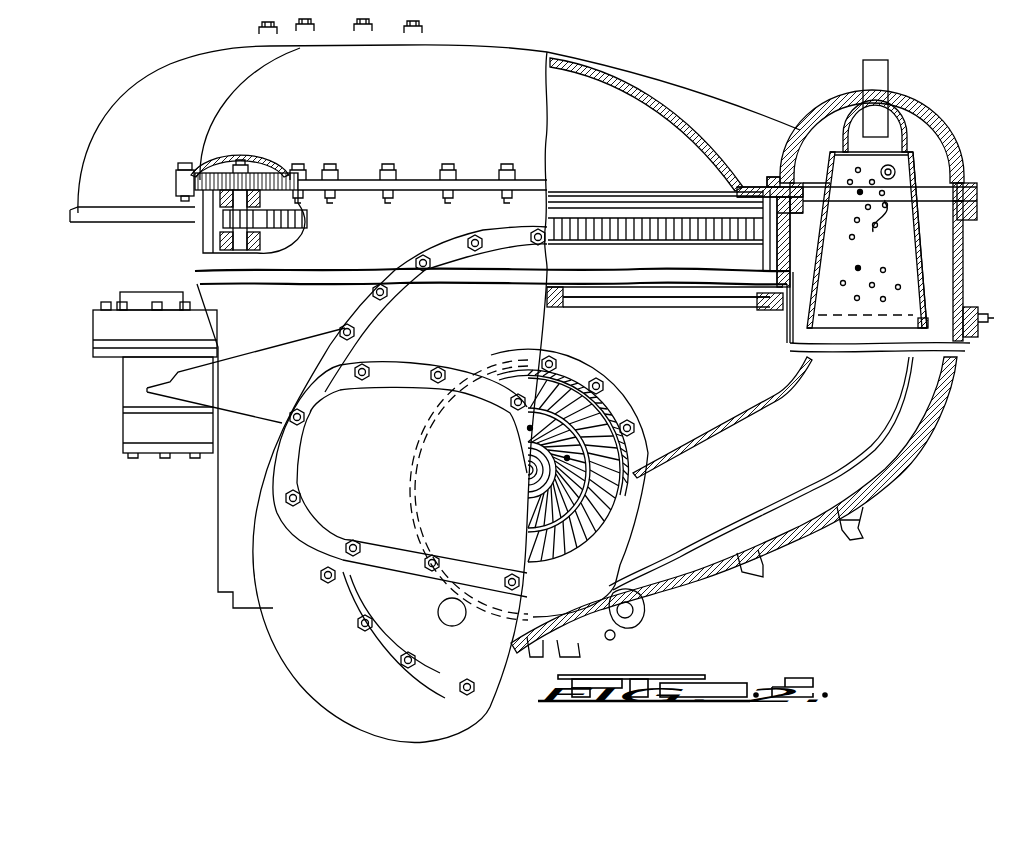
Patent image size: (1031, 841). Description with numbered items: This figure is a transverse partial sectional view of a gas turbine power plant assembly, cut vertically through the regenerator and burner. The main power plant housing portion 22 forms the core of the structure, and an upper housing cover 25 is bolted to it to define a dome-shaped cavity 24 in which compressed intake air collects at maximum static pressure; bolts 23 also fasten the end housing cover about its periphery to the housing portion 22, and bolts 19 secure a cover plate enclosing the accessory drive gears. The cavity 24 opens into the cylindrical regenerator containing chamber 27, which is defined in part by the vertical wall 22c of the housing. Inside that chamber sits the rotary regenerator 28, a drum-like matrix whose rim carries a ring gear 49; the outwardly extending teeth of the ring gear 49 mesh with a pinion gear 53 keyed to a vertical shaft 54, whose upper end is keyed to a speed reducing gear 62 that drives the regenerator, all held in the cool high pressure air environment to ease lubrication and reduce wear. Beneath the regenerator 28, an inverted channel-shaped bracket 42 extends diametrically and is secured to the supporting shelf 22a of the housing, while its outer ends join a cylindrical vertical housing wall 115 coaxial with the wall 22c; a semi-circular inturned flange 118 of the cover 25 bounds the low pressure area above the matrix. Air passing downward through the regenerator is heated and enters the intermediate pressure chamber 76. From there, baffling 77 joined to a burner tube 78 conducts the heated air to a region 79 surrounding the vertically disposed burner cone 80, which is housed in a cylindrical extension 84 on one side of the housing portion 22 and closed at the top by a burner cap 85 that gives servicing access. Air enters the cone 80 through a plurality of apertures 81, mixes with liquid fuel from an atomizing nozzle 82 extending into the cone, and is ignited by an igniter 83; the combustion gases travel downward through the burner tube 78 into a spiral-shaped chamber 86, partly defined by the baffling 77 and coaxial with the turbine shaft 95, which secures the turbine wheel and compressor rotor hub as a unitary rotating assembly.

The bolts 19 is at (438, 383).
The power plant housing portion 22 is at (258, 512).
The supporting shelf 22a is at (620, 307).
The cylindrical vertical wall of housing 22c is at (797, 238).
The bolts 23 is at (417, 258).
The dome-shaped cavity 24 is at (603, 140).
The upper housing cover 25 is at (420, 97).
The regenerator containing chamber 27 is at (770, 263).
The rotary regenerator 28 is at (723, 255).
The bracket 42 is at (570, 287).
The ring gear 49 is at (612, 235).
The pinion gear 53 is at (228, 220).
The shaft 54 is at (242, 250).
The speed reducing gear 62 is at (265, 180).
The chamber 76 is at (712, 371).
The baffling 77 is at (618, 396).
The burner tube 78 is at (752, 396).
The region surrounding burner cone 79 is at (918, 243).
The burner cone 80 is at (823, 242).
The apertures 81 is at (858, 268).
The atomizing nozzle 82 is at (885, 72).
The igniter 83 is at (893, 170).
The cylindrical housing extension 84 is at (948, 408).
The burner cap 85 is at (948, 116).
The spiral-shaped chamber 86 is at (592, 591).
The turbine shaft 95 is at (522, 478).
The cylindrical vertical housing wall 115 is at (765, 310).
The inturned flange 118 is at (753, 186).